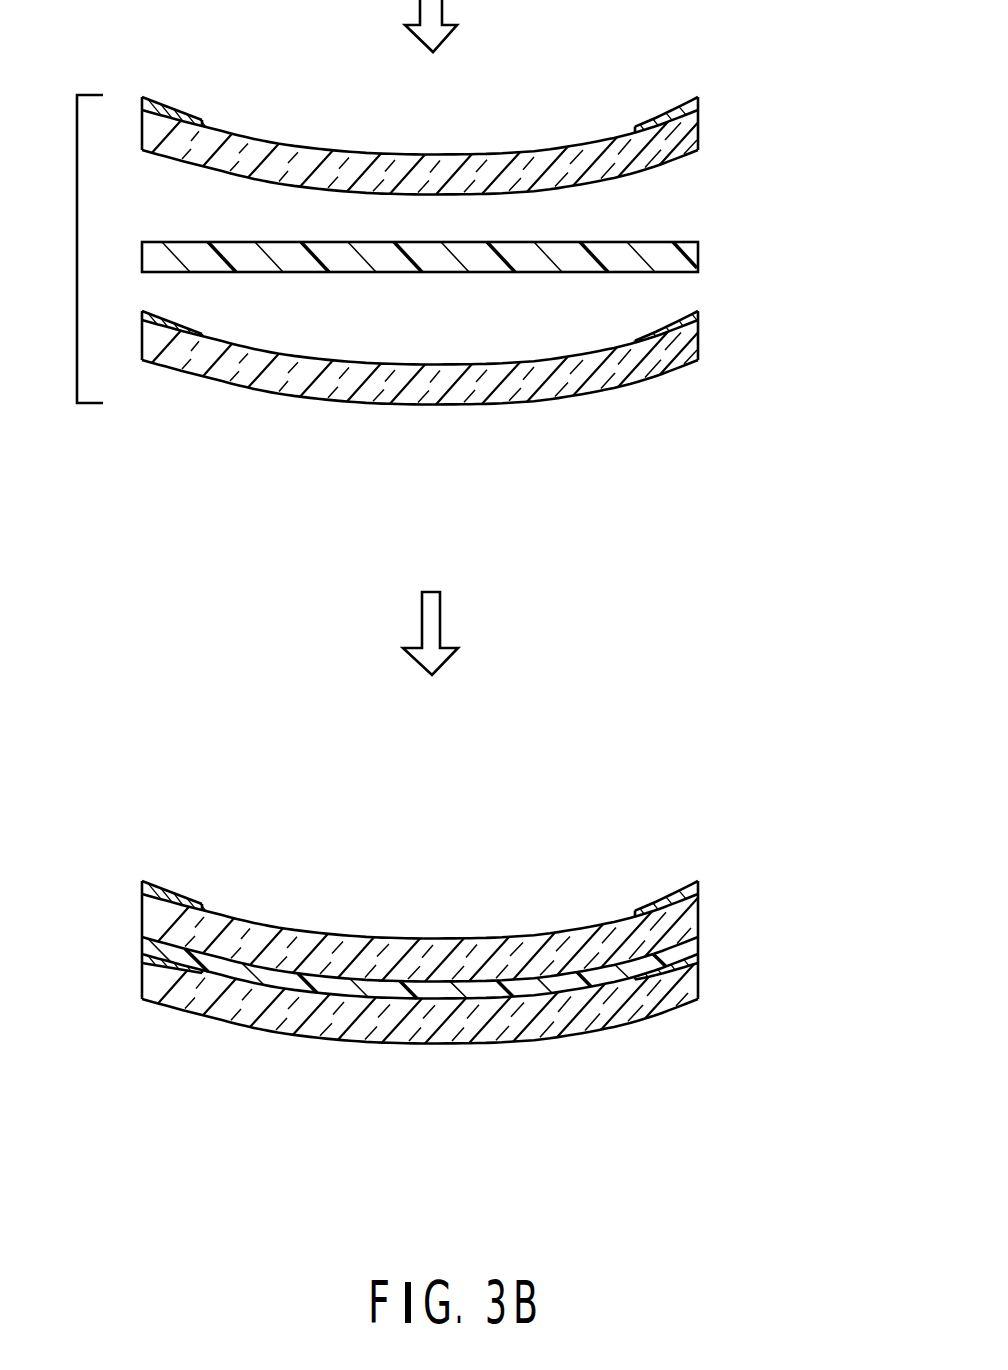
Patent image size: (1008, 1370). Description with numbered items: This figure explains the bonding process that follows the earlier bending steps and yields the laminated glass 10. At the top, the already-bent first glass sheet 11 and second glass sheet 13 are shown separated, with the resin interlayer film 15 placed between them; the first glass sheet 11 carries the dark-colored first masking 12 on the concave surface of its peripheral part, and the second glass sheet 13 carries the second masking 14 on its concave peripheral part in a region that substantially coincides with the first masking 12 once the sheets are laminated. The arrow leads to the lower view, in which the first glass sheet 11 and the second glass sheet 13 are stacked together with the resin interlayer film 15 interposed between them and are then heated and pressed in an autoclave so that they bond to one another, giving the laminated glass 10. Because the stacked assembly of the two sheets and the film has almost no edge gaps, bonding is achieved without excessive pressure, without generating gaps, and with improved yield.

The laminated glass 10 is at (723, 814).
The first glass sheet 11 is at (698, 138).
The first masking 12 is at (698, 112).
The second glass sheet 13 is at (698, 357).
The second masking 14 is at (698, 323).
The resin interlayer film 15 is at (698, 260).